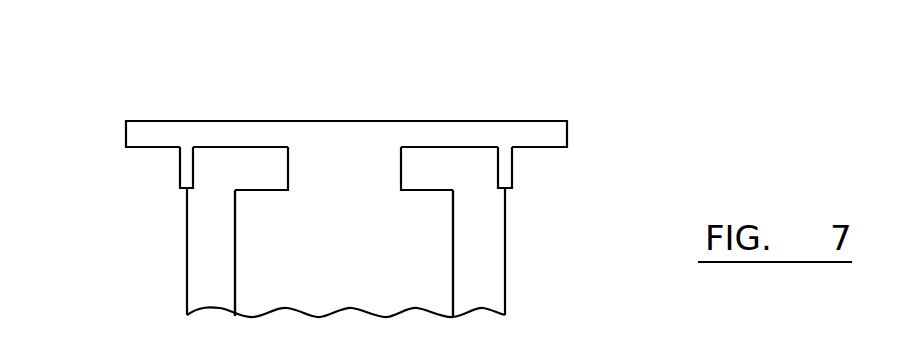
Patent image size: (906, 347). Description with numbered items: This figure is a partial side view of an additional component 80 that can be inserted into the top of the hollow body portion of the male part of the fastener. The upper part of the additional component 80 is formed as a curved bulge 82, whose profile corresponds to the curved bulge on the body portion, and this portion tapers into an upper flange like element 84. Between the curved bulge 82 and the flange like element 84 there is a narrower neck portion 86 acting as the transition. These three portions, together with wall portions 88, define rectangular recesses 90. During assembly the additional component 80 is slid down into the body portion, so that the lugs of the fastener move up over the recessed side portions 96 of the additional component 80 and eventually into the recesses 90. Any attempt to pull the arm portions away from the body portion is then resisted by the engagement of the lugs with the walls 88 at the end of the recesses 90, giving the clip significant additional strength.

The additional component 80 is at (393, 107).
The curved bulge 82 is at (344, 164).
The upper flange like element 84 is at (264, 133).
The narrower neck portion 86 is at (343, 163).
The wall portions 88 is at (189, 170).
The rectangular recesses 90 is at (246, 165).
The recessed side portions 96 is at (210, 238).